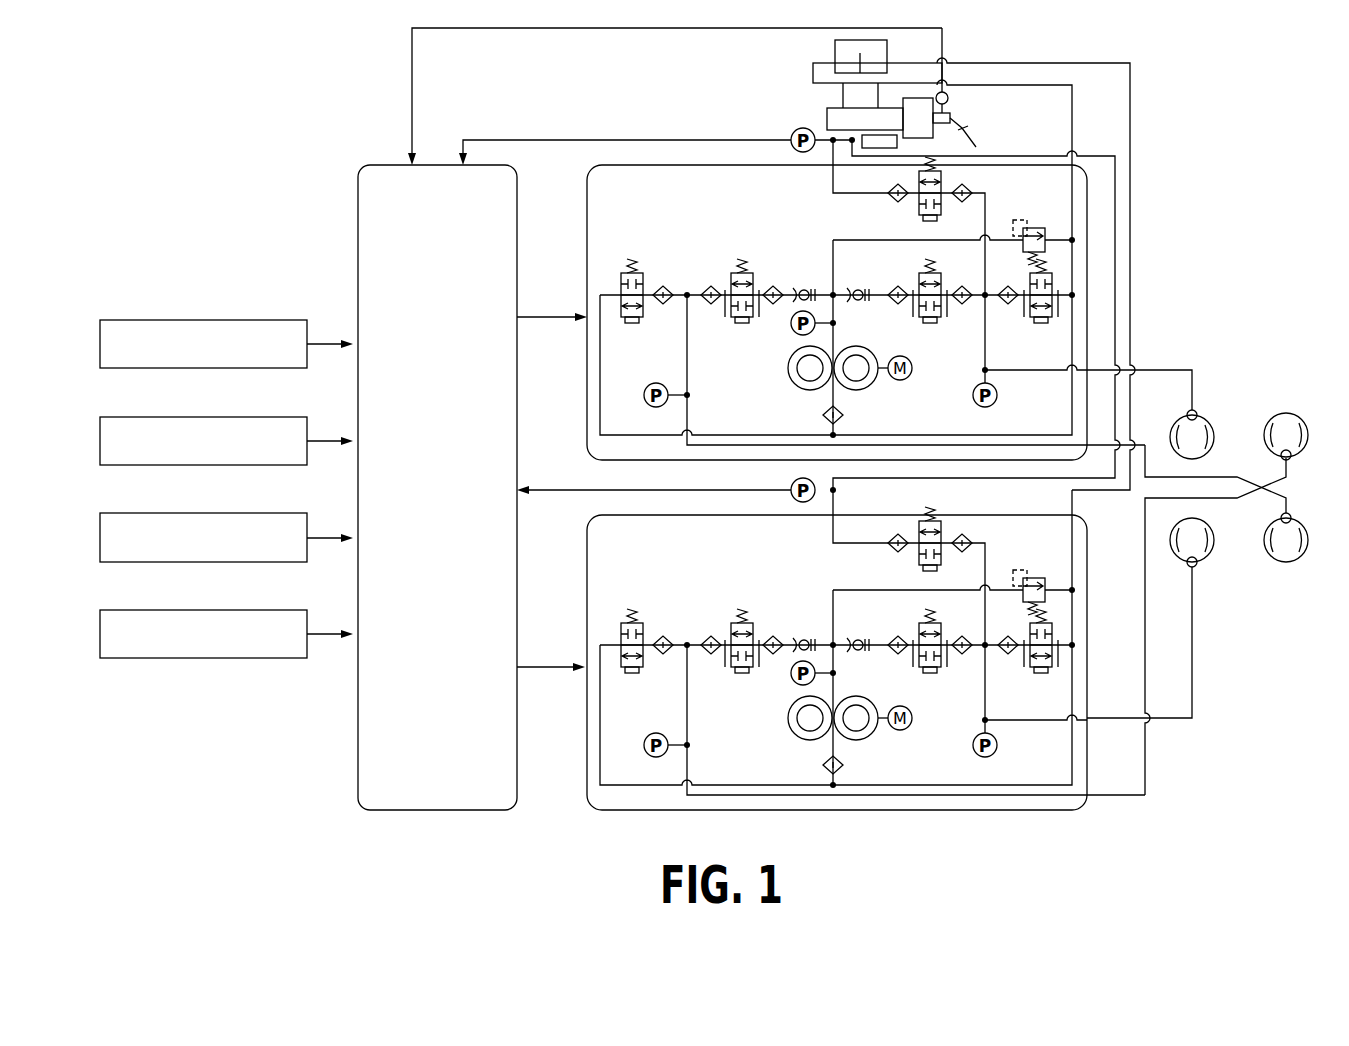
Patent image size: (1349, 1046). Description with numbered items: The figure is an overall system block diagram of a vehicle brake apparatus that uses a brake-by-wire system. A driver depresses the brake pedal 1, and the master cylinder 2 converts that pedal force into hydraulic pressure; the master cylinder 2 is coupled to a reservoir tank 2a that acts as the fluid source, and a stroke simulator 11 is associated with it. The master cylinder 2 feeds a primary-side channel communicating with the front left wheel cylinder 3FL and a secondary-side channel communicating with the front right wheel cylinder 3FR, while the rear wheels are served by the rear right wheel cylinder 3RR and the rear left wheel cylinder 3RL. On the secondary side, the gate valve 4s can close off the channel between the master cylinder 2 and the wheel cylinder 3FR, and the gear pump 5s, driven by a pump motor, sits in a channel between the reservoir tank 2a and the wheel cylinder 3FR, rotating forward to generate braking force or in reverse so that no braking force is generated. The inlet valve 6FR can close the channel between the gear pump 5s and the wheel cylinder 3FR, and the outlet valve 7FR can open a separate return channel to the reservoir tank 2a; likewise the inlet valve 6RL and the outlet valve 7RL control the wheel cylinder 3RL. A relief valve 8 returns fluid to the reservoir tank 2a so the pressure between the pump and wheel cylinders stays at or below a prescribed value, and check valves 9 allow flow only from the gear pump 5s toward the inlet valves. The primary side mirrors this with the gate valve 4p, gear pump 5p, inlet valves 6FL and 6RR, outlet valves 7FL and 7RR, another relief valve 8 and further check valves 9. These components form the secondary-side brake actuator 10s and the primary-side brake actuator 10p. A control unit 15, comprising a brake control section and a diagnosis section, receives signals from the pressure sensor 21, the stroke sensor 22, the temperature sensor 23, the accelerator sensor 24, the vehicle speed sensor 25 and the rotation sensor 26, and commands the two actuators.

The brake pedal 1 is at (974, 129).
The master cylinder 2 is at (824, 109).
The reservoir tank 2a is at (836, 49).
The stroke simulator 11 is at (900, 145).
The pressure sensor 21 is at (797, 130).
The stroke sensor 22 is at (950, 98).
The control unit 15 is at (358, 196).
The secondary-side brake actuator 10s is at (588, 217).
The primary-side brake actuator 10p is at (834, 658).
The secondary-side gate valve 4s is at (920, 220).
The primary-side gate valve 4p is at (906, 547).
The secondary-side gear pump 5s is at (792, 380).
The primary-side gear pump 5p is at (837, 732).
The inlet valve 6RL is at (744, 324).
The inlet valve 6FR is at (932, 324).
The inlet valve 6RR is at (745, 669).
The inlet valve 6FL is at (939, 671).
The outlet valve 7RL is at (634, 324).
The outlet valve 7FR is at (1038, 324).
The outlet valve 7RR is at (634, 669).
The outlet valve 7FL is at (1027, 661).
The relief valve 8 is at (1036, 231).
The check valve 9 is at (801, 294).
The front right wheel cylinder 3FR is at (1208, 420).
The rear right wheel cylinder 3RR is at (1300, 420).
The front left wheel cylinder 3FL is at (1204, 560).
The rear left wheel cylinder 3RL is at (1300, 560).
The temperature sensor 23 is at (162, 314).
The accelerator sensor 24 is at (162, 411).
The vehicle speed sensor 25 is at (162, 507).
The rotation sensor 26 is at (162, 604).